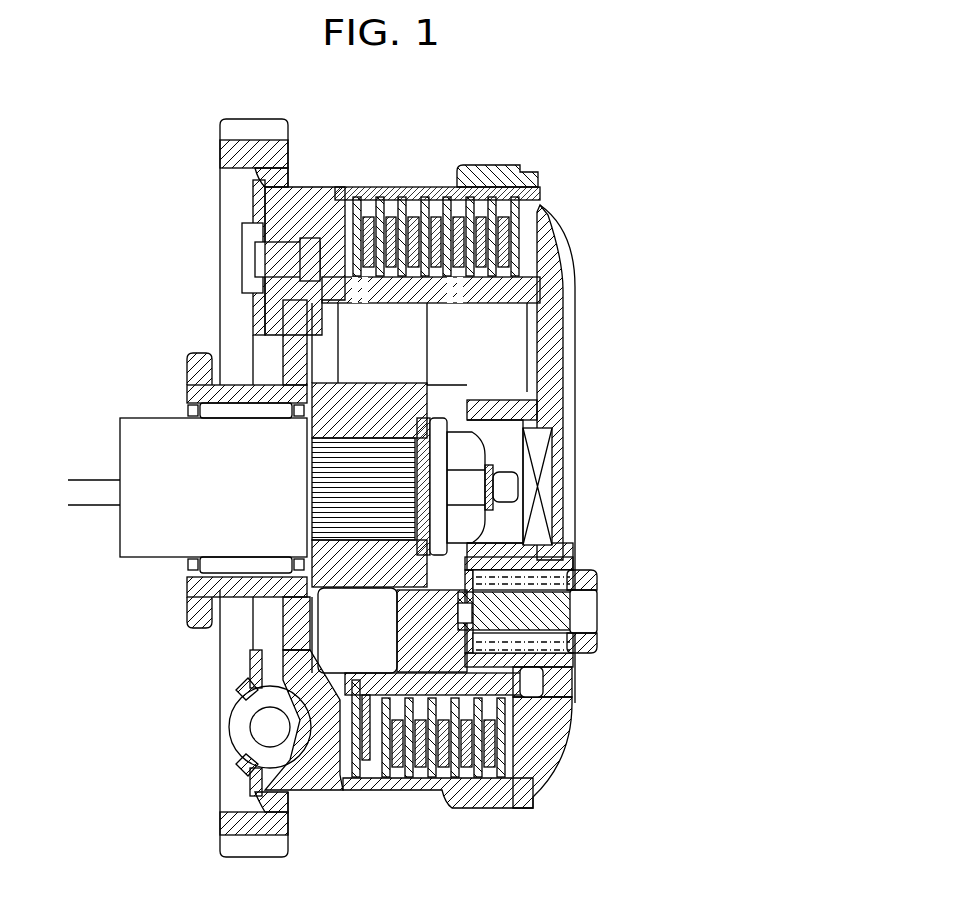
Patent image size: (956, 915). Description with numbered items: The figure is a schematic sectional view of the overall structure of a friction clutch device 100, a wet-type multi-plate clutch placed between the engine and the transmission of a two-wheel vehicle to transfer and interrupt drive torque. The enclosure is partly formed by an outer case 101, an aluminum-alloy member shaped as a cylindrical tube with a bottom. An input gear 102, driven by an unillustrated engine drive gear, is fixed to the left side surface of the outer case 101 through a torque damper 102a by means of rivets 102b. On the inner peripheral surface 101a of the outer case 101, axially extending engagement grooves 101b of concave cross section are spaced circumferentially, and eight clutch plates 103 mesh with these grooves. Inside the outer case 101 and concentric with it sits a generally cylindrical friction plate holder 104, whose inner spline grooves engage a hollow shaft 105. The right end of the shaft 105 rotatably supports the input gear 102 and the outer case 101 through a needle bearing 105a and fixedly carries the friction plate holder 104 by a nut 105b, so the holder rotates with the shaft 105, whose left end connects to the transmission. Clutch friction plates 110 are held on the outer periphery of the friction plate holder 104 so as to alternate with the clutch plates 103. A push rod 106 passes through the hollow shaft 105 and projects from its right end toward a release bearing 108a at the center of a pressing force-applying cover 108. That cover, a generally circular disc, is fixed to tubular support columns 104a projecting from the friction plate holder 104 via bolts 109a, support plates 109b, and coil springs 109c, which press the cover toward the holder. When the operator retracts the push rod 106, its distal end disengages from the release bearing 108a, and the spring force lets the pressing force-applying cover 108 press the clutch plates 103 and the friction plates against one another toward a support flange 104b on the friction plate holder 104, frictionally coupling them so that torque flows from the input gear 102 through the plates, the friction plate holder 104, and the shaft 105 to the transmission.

The friction clutch device 100 is at (494, 129).
The outer case 101 is at (352, 790).
The inner peripheral surface 101a is at (537, 203).
The engagement grooves 101b is at (537, 185).
The input gear 102 is at (252, 118).
The torque damper 102a is at (228, 728).
The rivets 102b is at (238, 250).
The clutch plates 103 is at (427, 197).
The friction plate holder 104 is at (478, 302).
The tubular support columns 104a is at (405, 604).
The support flange 104b is at (335, 232).
The shaft 105 is at (132, 418).
The needle bearing 105a is at (190, 573).
The nut 105b is at (453, 425).
The push rod 106 is at (78, 478).
The pressing force-applying cover 108 is at (563, 333).
The release bearing 108a is at (552, 468).
The bolts 109a is at (597, 609).
The support plates 109b is at (597, 645).
The coil springs 109c is at (578, 574).
The clutch friction plates 110 is at (371, 203).